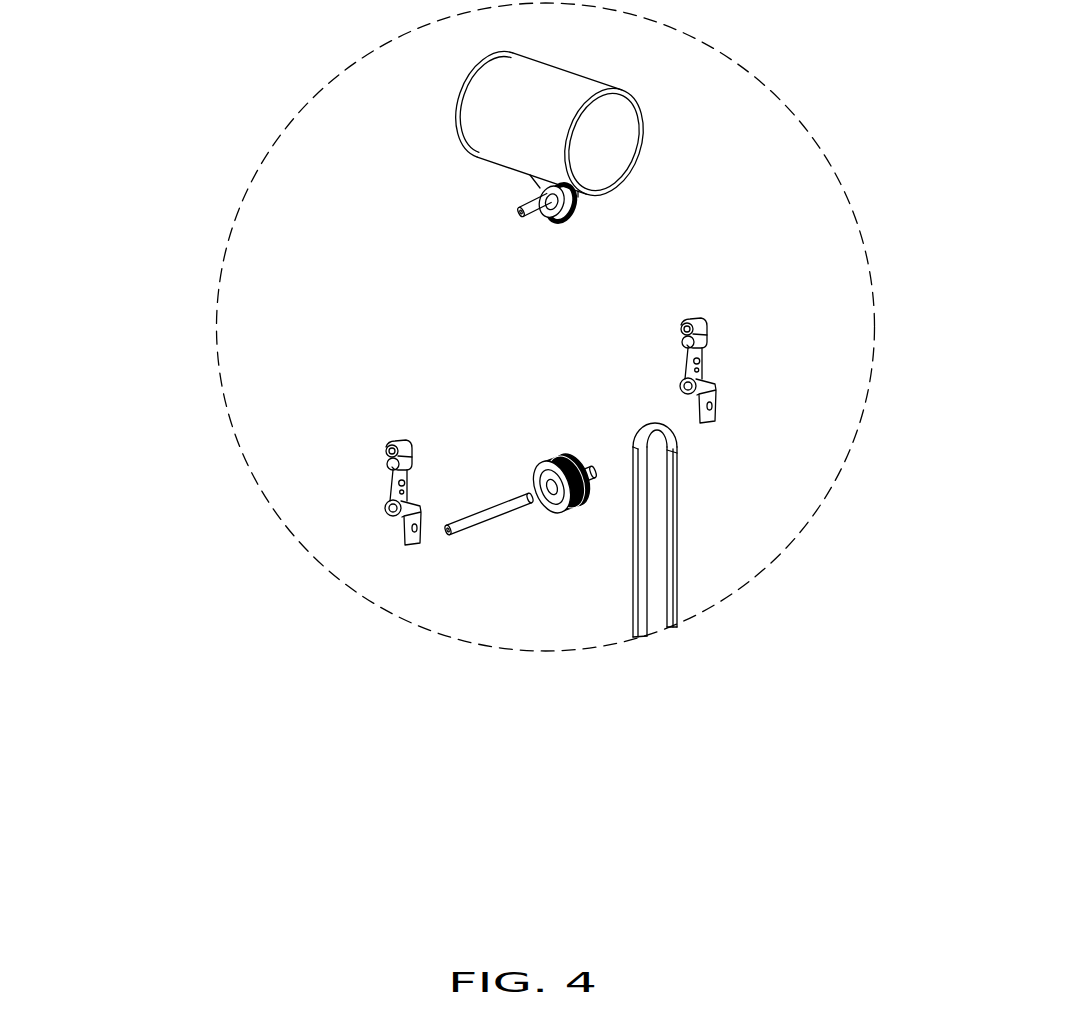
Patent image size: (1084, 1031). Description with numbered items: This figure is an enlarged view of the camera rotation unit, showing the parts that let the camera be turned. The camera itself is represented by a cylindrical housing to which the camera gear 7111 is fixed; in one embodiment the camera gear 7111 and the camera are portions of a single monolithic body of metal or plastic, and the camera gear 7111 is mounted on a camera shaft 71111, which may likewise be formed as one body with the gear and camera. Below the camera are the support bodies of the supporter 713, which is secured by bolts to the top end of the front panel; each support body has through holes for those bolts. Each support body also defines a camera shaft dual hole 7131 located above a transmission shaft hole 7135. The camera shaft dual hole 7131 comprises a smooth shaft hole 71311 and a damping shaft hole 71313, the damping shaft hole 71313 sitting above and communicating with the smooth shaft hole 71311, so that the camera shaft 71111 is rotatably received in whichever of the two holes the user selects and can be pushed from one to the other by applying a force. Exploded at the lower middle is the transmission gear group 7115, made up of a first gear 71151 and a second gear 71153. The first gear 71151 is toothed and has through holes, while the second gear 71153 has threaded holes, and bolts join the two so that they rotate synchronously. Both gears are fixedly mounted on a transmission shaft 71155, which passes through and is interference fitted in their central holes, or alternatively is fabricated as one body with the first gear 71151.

The camera gear 7111 is at (575, 222).
The camera shaft 71111 is at (524, 219).
The supporter 713 is at (722, 360).
The camera shaft dual hole 7131 is at (257, 504).
The damping shaft hole 71313 is at (386, 456).
The smooth shaft hole 71311 is at (390, 480).
The transmission shaft hole 7135 is at (389, 518).
The transmission gear group 7115 is at (547, 606).
The first gear 71151 is at (586, 504).
The second gear 71153 is at (553, 514).
The transmission shaft 71155 is at (478, 524).